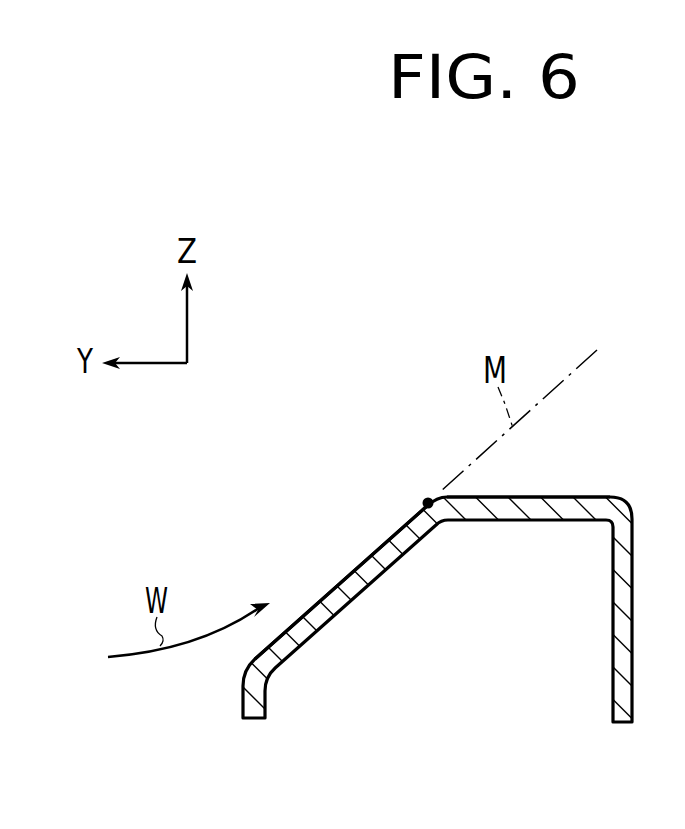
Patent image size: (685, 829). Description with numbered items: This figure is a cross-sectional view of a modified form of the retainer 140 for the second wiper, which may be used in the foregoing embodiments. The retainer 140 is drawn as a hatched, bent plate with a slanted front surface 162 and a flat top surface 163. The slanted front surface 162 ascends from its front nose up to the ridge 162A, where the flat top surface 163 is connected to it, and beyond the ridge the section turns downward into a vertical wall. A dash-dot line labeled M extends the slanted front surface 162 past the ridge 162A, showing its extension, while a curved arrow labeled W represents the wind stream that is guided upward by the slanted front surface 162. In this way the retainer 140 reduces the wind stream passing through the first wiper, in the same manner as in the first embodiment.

The retainer 140 is at (630, 467).
The slanted front surface 162 is at (337, 586).
The ridge 162A is at (428, 500).
The flat top surface 163 is at (560, 497).